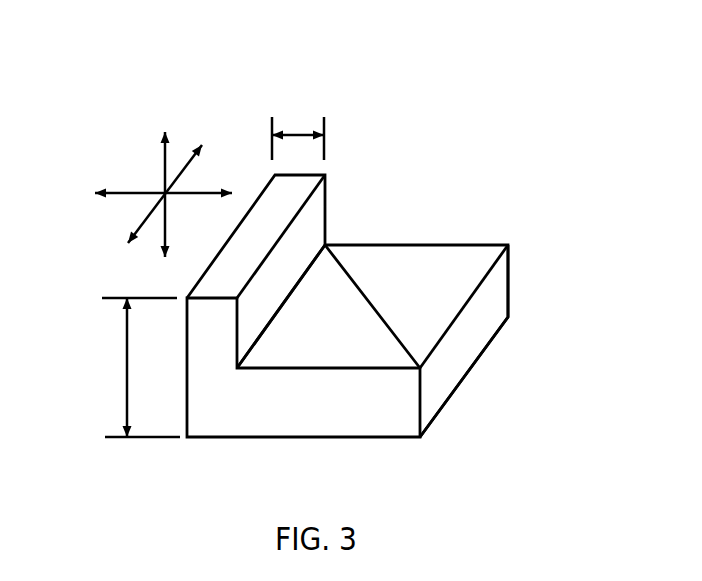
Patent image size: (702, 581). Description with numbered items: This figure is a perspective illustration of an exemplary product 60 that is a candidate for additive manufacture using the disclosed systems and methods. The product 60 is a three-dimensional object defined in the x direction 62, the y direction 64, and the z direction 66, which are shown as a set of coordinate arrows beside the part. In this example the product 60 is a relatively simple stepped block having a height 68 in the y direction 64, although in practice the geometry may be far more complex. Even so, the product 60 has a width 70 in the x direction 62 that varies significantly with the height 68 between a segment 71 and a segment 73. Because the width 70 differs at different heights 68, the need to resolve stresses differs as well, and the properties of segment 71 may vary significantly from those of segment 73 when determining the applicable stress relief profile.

The product 60 is at (420, 190).
The x direction 62 is at (127, 190).
The y direction 64 is at (163, 150).
The z direction 66 is at (137, 223).
The height 68 is at (123, 370).
The width 70 is at (298, 130).
The segment 71 is at (460, 342).
The segment 73 is at (282, 262).